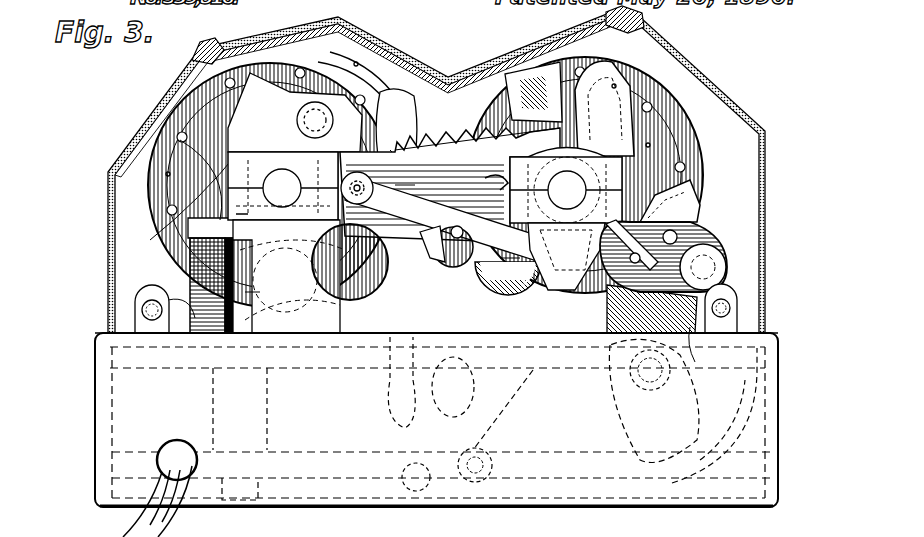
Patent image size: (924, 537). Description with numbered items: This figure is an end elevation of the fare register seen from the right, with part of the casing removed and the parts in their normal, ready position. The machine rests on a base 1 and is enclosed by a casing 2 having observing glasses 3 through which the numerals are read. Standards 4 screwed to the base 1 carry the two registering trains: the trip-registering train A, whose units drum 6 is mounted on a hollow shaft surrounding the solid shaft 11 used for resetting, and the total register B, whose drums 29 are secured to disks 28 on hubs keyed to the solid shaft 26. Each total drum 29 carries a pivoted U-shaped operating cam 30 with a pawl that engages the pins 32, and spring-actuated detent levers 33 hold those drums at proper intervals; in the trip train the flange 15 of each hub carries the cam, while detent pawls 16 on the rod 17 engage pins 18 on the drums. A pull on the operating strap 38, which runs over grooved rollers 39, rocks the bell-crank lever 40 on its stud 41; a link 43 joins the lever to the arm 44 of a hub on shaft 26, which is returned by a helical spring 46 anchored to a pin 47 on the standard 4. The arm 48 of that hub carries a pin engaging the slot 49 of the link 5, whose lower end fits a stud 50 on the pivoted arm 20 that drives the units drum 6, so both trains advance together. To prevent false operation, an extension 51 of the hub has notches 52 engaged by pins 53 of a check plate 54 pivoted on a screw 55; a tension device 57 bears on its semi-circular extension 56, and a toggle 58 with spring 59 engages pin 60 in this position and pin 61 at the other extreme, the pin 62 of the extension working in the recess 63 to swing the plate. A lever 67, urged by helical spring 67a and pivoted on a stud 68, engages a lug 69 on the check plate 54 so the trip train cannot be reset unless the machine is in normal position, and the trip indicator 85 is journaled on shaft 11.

The base 1 is at (436, 420).
The casing 2 is at (766, 209).
The observing glasses 3 is at (258, 36).
The standard 4 is at (410, 269).
The link 5 is at (527, 150).
The units drum 6 is at (167, 174).
The solid shaft 11 is at (283, 186).
The circular flange 15 is at (193, 188).
The detent pawl 16 is at (168, 352).
The rod 17 is at (151, 305).
The pin 18 is at (204, 46).
The pivoted arm 20 is at (270, 140).
The solid shaft 26 is at (566, 186).
The disk 28 is at (650, 143).
The drum 29 is at (697, 186).
The U-shaped operating cam 30 is at (593, 66).
The pin 32 is at (648, 105).
The detent lever 33 is at (695, 360).
The operating strap 38 is at (675, 473).
The grooved roller 39 is at (300, 500).
The bell-crank lever 40 is at (722, 411).
The stud 41 is at (650, 372).
The link 43 is at (640, 304).
The arm 44 is at (712, 250).
The helical spring 46 is at (506, 72).
The pin 47 is at (496, 182).
The arm 48 is at (615, 83).
The slot 49 is at (604, 108).
The stud 50 is at (381, 92).
The extension 51 is at (418, 185).
The notches 52 is at (438, 148).
The pin 53 is at (355, 191).
The check plate 54 is at (508, 277).
The screw 55 is at (420, 368).
The semi-circular extension 56 is at (383, 440).
The tension device 57 is at (415, 488).
The toggle 58 is at (432, 253).
The spring 59 is at (516, 255).
The pin 60 is at (395, 275).
The pin 61 is at (593, 292).
The pin 62 is at (452, 233).
The recess 63 is at (466, 242).
The lever 67 is at (178, 283).
The helical spring 67a is at (251, 300).
The stud 68 is at (277, 216).
The lug 69 is at (396, 140).
The trip indicator 85 is at (357, 62).
The trip-registering train A is at (168, 150).
The total register B is at (685, 149).